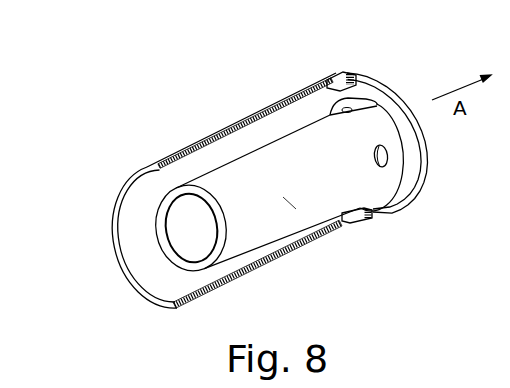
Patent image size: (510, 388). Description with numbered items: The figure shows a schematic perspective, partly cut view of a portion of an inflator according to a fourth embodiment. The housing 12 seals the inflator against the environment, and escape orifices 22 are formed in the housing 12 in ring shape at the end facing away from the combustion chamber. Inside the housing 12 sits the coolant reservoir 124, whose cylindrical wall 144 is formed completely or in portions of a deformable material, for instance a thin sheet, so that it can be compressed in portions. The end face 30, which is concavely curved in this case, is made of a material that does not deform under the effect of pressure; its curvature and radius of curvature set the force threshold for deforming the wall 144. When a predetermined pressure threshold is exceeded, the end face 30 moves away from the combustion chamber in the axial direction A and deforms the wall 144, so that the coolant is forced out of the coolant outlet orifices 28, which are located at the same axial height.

The housing 12 is at (181, 155).
The escape orifices 22 is at (344, 74).
The coolant outlet orifices 28 is at (363, 112).
The end face 30 is at (192, 242).
The coolant reservoir 124 is at (283, 197).
The cylindrical wall 144 is at (243, 178).